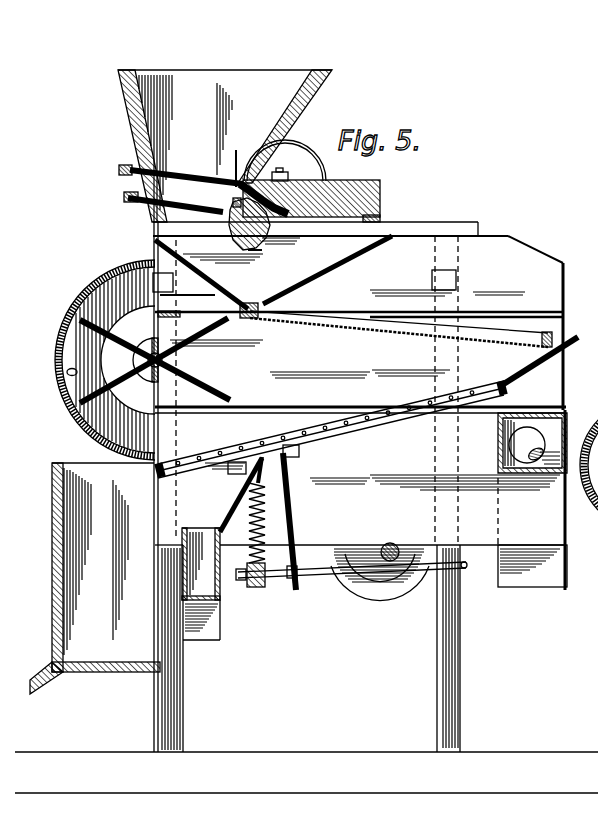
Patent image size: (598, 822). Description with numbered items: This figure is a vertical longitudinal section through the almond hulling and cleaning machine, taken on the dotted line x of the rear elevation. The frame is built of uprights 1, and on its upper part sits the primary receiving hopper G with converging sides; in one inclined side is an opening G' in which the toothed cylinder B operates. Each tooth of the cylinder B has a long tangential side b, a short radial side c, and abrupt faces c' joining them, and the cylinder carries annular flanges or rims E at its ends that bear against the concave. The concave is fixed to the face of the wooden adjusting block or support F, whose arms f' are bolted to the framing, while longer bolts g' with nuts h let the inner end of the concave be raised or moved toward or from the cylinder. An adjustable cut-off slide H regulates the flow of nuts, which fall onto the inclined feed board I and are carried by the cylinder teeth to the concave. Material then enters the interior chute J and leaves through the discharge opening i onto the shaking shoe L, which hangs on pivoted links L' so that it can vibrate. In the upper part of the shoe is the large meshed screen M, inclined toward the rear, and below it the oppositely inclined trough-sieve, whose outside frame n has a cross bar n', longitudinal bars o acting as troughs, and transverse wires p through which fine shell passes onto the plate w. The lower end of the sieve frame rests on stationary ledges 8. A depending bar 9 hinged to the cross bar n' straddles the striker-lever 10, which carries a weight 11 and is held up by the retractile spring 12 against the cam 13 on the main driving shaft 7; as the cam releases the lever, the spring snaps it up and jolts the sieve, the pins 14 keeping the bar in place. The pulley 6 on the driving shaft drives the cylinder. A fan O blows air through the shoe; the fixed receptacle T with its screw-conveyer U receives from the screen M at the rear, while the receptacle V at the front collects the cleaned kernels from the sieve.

The primary receiving hopper G is at (225, 146).
The opening G' is at (226, 168).
The bolts g' is at (279, 167).
The adjustable cut-off slide H is at (309, 146).
The nuts h is at (288, 175).
The adjusting block or support F is at (347, 180).
The arms or lugs f' is at (315, 216).
The inclined feed board I is at (167, 207).
The short radial side c is at (228, 225).
The abrupt faces c' is at (278, 231).
The cylinder B is at (248, 246).
The long side b is at (260, 250).
The interior chute J is at (242, 298).
The discharge opening i is at (256, 304).
The links L' is at (359, 298).
The shaking shoe L is at (296, 362).
The large meshed screen M is at (401, 333).
The outside frame n is at (331, 429).
The cross bar n' is at (313, 429).
The longitudinal bars o is at (276, 440).
The transverse wires p is at (230, 451).
The dotted line x is at (355, 430).
The plate w is at (384, 428).
The stationary ledges or supports 8 is at (232, 472).
The annular flanges or rims E is at (578, 343).
The fixed receptacle T is at (565, 418).
The screw-conveyer U is at (527, 445).
The retractile spring 12 is at (241, 499).
The depending bar or support 9 is at (297, 521).
The weight 11 is at (258, 587).
The studs or pins 14 is at (284, 580).
The striker-lever 10 is at (327, 580).
The main driving shaft 7 is at (394, 547).
The pulley 6 is at (386, 590).
The detent or cam 13 is at (405, 588).
The uprights 1 is at (163, 715).
The receptacle V is at (128, 560).
The box v is at (214, 563).
The blower or fan O is at (142, 360).